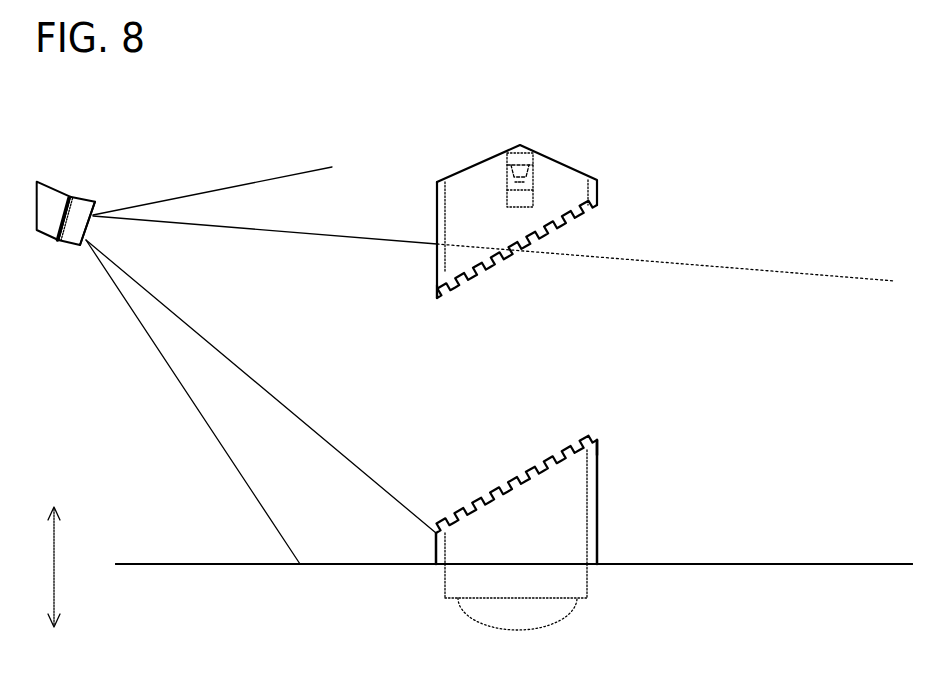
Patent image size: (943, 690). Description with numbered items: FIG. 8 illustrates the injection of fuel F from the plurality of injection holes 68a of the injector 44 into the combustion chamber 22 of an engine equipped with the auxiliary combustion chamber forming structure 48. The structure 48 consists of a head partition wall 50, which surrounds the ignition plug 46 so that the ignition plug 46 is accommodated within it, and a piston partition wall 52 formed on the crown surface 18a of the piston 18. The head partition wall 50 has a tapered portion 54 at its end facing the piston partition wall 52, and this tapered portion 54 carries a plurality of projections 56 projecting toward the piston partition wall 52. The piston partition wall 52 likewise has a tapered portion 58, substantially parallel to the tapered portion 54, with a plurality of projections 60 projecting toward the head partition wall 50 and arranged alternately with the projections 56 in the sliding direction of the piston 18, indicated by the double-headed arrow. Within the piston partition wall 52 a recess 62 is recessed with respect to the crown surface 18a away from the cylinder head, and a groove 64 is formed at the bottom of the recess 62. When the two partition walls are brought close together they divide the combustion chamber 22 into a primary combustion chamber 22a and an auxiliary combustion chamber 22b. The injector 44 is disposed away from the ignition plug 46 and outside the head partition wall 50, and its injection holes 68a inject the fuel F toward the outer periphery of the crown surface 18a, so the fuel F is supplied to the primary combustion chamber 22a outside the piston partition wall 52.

The piston 18 is at (858, 563).
The crown surface 18a is at (793, 563).
The combustion chamber 22 is at (514, 516).
The primary combustion chamber 22a is at (353, 544).
The auxiliary combustion chamber 22b is at (565, 544).
The injector 44 is at (63, 194).
The ignition plug 46 is at (507, 152).
The auxiliary combustion chamber forming structure 48 is at (511, 195).
The head partition wall 50 is at (436, 224).
The piston partition wall 52 is at (598, 512).
The tapered portion 54 is at (436, 292).
The projections 56 is at (583, 213).
The tapered portion 58 is at (598, 440).
The projections 60 is at (568, 452).
The recess 62 is at (588, 580).
The groove 64 is at (573, 612).
The injection holes 68a is at (101, 210).
The fuel F is at (190, 224).